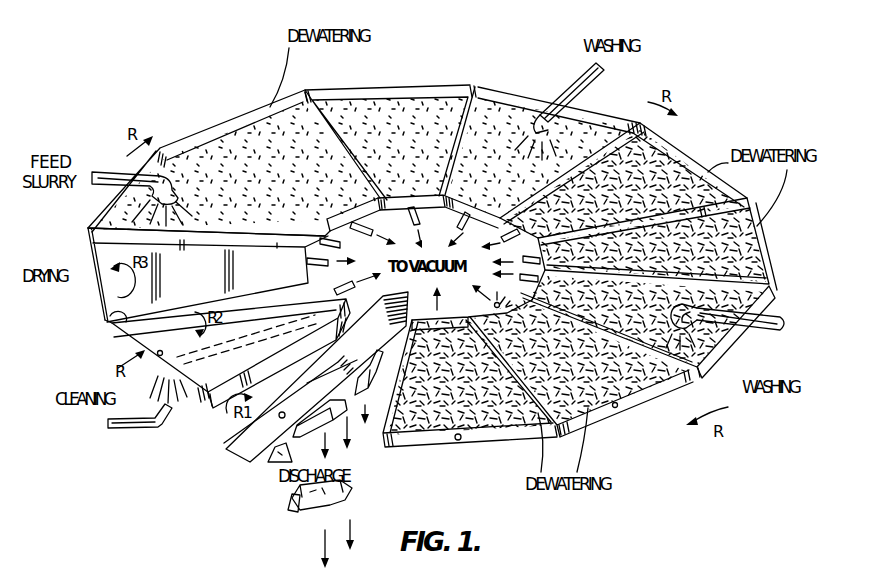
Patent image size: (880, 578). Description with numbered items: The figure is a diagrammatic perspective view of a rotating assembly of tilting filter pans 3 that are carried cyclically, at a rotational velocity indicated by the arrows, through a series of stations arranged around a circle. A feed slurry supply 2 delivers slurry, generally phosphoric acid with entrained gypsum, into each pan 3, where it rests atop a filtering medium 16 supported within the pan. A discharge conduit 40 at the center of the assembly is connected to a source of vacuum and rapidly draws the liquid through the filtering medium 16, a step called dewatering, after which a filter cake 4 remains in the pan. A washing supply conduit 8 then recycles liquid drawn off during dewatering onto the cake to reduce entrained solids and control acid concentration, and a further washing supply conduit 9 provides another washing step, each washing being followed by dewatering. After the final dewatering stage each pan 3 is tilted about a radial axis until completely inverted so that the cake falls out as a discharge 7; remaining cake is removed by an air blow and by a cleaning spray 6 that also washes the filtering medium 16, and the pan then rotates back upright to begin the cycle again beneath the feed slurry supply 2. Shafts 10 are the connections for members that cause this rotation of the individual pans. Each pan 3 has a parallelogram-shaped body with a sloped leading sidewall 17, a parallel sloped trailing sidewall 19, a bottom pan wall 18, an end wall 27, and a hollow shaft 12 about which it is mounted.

The feed slurry supply 2 is at (102, 173).
The tilting filter pan 3 is at (204, 110).
The filter cake 4 is at (364, 132).
The cleaning spray 6 is at (151, 432).
The discharge 7 is at (354, 449).
The washing supply conduit 8 is at (561, 87).
The washing supply conduit 9 is at (787, 323).
The shaft 10 is at (615, 408).
The hollow shaft 12 is at (468, 440).
The filtering medium 16 is at (100, 266).
The leading sidewall 17 is at (88, 229).
The bottom pan wall 18 is at (112, 342).
The trailing sidewall 19 is at (108, 319).
The right end wall 27 is at (639, 402).
The discharge conduit 40 is at (359, 228).